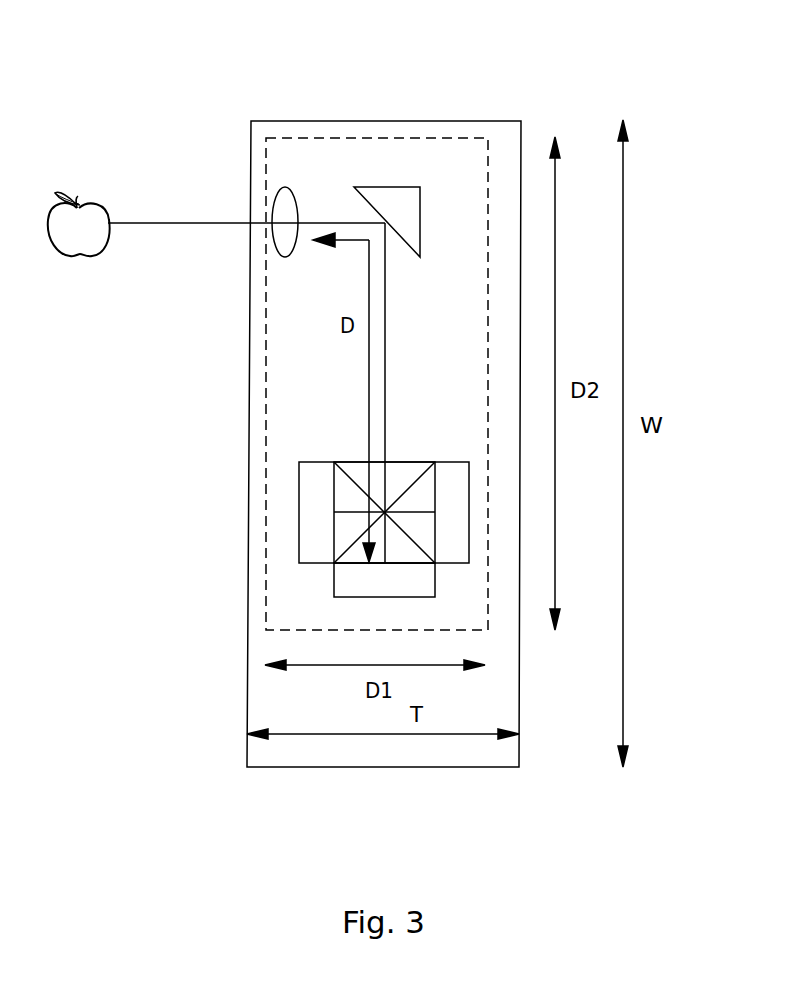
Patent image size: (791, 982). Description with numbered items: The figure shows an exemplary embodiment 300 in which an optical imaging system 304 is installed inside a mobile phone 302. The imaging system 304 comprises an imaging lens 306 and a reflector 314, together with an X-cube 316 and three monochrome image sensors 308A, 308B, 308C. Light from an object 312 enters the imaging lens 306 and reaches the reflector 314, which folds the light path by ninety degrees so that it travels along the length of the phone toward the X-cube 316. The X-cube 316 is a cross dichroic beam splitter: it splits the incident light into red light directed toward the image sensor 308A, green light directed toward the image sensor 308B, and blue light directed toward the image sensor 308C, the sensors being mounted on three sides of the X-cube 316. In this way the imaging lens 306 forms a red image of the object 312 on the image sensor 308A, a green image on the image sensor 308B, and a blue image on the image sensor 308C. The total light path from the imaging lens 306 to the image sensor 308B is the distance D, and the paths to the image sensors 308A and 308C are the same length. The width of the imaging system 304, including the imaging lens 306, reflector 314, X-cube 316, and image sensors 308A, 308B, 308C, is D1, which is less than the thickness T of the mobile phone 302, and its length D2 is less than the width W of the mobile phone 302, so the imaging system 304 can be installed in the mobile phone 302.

The exemplary embodiment 300 is at (163, 78).
The mobile phone 302 is at (490, 121).
The optical imaging system 304 is at (292, 138).
The imaging lens 306 is at (297, 207).
The monochrome image sensor 308A is at (322, 462).
The monochrome image sensor 308B is at (333, 563).
The monochrome image sensor 308C is at (462, 563).
The object 312 is at (108, 205).
The reflector 314 is at (422, 220).
The X-cube 316 is at (403, 462).